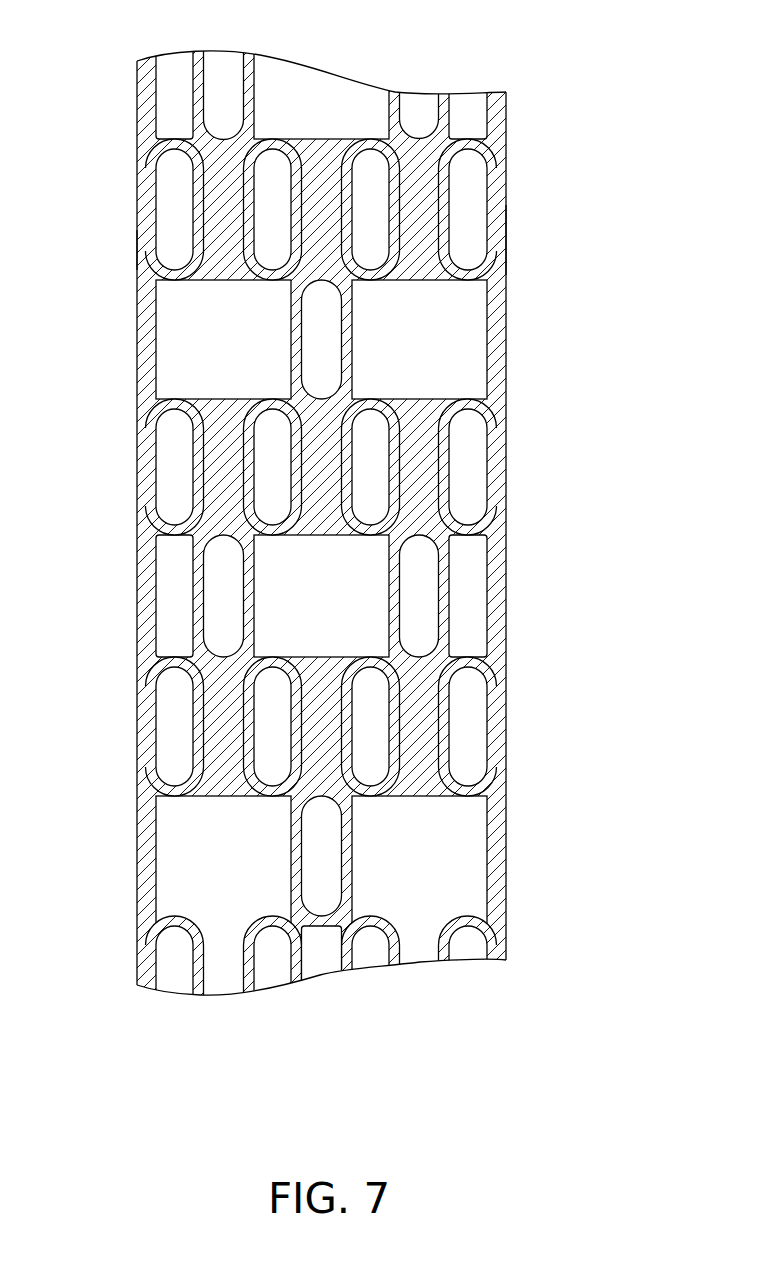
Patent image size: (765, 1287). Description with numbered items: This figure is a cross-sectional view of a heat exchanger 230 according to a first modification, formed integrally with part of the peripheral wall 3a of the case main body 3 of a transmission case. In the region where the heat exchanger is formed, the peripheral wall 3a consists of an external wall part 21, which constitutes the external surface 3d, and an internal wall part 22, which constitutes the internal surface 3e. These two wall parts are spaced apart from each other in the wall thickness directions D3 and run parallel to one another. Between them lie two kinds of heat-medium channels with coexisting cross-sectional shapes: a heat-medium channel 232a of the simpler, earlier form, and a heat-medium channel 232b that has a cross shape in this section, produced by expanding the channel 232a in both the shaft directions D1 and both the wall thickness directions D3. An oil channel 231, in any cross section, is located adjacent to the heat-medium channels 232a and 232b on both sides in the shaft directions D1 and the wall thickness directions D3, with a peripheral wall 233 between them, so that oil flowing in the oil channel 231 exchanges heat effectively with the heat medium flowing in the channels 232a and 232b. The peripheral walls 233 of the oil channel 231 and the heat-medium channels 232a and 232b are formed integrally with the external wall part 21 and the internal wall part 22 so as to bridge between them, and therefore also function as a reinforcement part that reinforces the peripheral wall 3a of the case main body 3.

The case main body 3 is at (332, 509).
The peripheral wall 3a is at (507, 222).
The external surface 3d is at (507, 248).
The internal surface 3e is at (137, 250).
The external wall part 21 is at (505, 822).
The internal wall part 22 is at (147, 843).
The heat exchanger 230 is at (423, 943).
The oil channel 231 is at (368, 163).
The heat-medium channel 232a is at (173, 72).
The heat-medium channel 232b is at (252, 344).
The peripheral wall 233 is at (450, 720).
The shaft directions D1 is at (595, 478).
The wall thickness directions D3 is at (375, 1034).